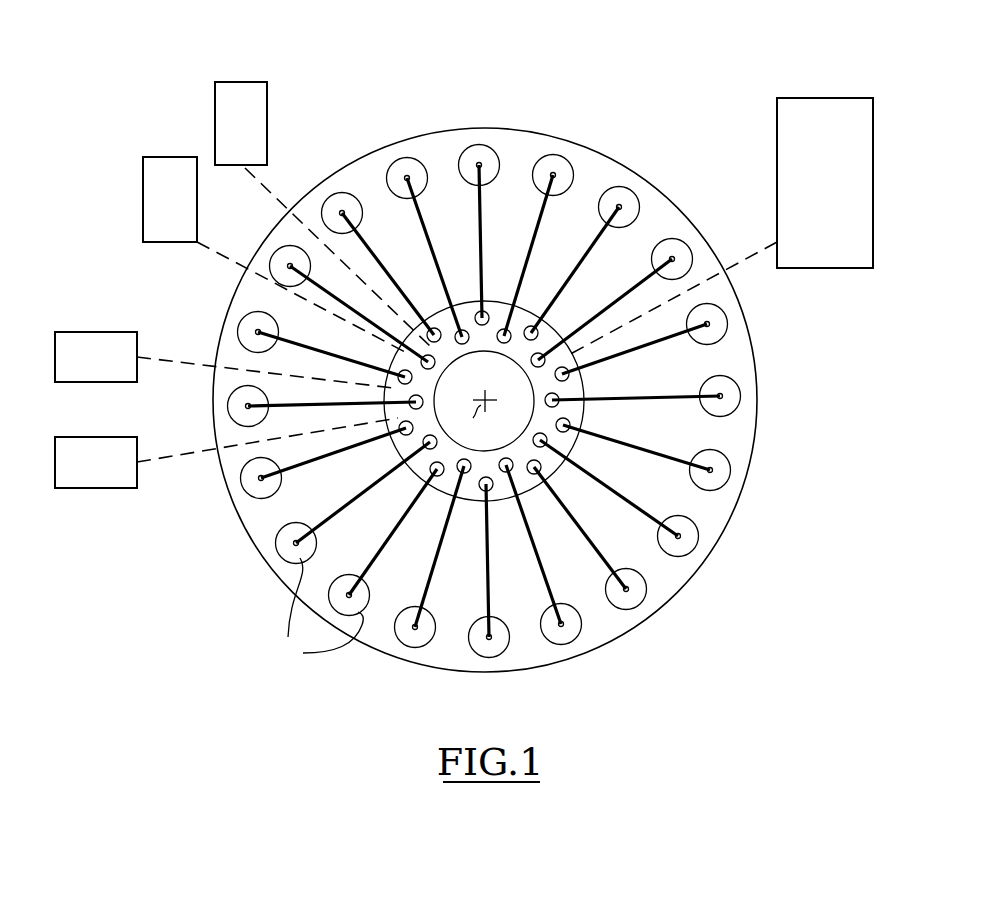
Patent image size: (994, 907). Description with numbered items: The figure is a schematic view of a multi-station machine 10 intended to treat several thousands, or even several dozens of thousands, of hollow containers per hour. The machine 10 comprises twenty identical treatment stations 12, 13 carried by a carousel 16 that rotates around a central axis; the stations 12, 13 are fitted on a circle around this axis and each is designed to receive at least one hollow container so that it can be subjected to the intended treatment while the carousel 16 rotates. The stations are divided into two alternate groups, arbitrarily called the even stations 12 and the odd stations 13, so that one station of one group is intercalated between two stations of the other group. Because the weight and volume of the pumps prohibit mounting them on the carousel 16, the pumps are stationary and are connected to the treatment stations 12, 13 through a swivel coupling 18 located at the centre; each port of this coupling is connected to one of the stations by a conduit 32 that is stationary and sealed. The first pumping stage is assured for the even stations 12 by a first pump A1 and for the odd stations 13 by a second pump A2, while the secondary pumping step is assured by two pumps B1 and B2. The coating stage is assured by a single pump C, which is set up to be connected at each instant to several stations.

The machine 10 is at (524, 397).
The even treatment station 12 is at (475, 643).
The odd treatment station 13 is at (314, 613).
The carousel 16 is at (748, 437).
The swivel coupling 18 is at (587, 385).
The conduit 32 is at (533, 232).
The first pump A1 is at (238, 92).
The second pump A2 is at (175, 162).
The pump B1 is at (98, 340).
The pump B2 is at (95, 472).
The coating pump C is at (828, 115).